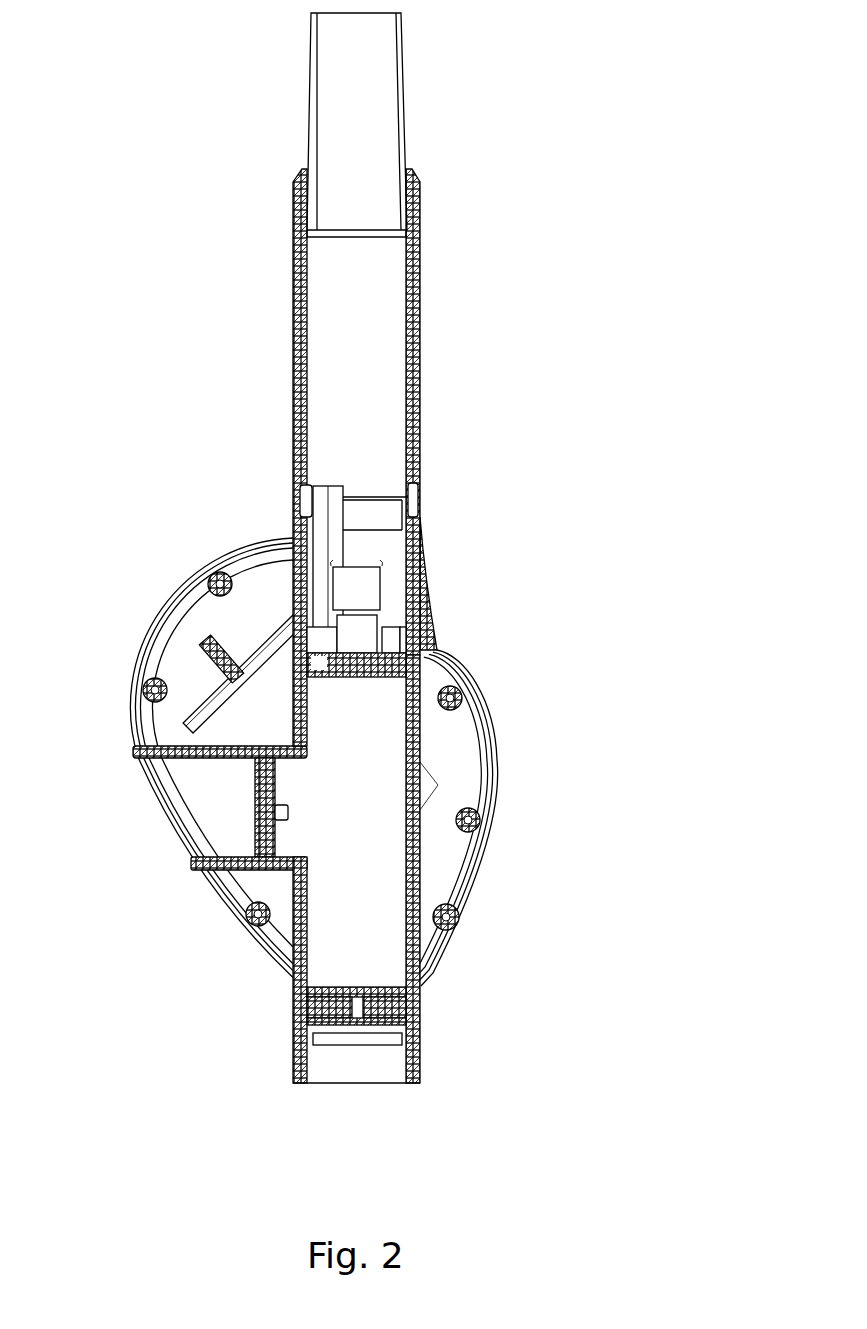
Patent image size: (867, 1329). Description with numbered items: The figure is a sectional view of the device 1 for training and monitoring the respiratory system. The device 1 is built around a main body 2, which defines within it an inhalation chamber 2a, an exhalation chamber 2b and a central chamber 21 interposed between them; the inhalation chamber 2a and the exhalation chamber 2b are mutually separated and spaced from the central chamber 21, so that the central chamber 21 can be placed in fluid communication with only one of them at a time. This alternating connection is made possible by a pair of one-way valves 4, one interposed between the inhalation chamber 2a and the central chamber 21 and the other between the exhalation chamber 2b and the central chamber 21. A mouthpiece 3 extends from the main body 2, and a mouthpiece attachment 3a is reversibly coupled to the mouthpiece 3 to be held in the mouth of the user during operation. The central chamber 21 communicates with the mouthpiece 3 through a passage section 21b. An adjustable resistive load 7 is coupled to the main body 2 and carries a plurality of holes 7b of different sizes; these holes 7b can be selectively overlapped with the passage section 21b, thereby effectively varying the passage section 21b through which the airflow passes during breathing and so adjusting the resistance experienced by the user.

The device 1 is at (212, 278).
The main body 2 is at (157, 643).
The inhalation chamber 2a is at (365, 1067).
The exhalation chamber 2b is at (203, 815).
The mouthpiece 3 is at (417, 370).
The mouthpiece attachment 3a is at (378, 107).
The one-way valves 4 is at (265, 810).
The resistive load 7 is at (297, 503).
The holes 7b is at (395, 628).
The central chamber 21 is at (365, 797).
The passage section 21b is at (322, 664).